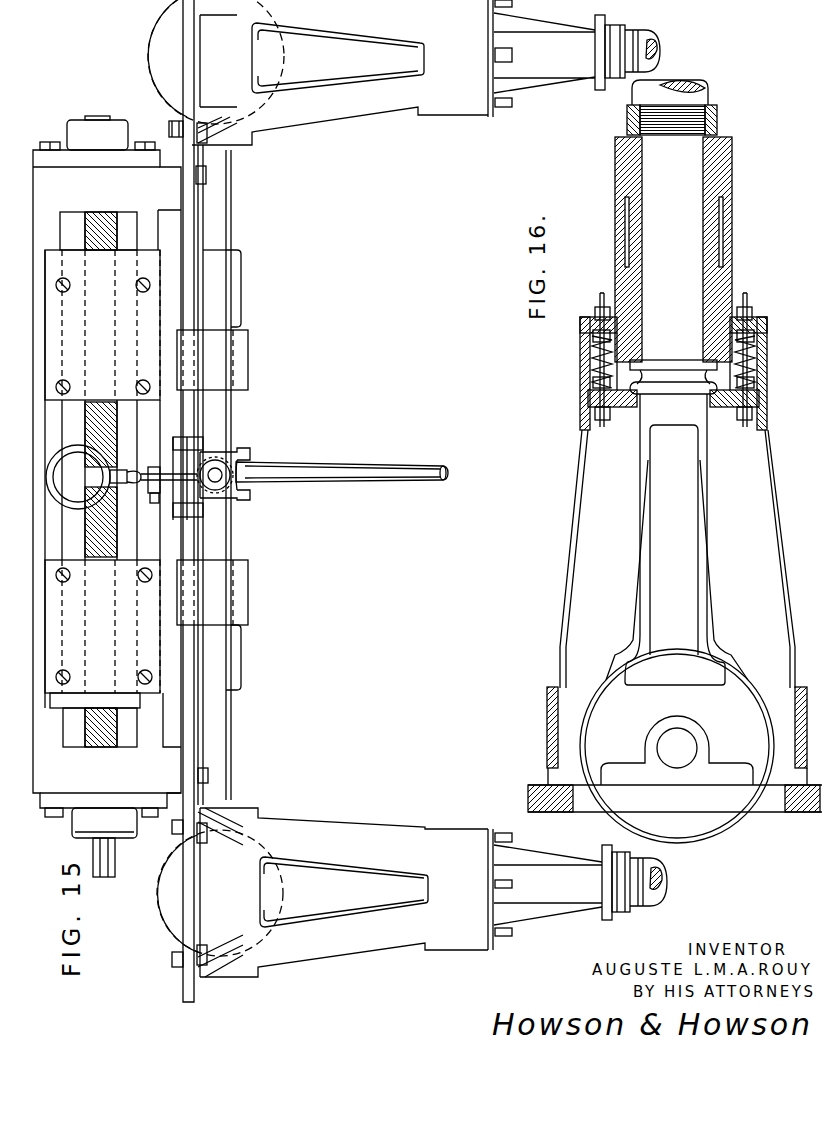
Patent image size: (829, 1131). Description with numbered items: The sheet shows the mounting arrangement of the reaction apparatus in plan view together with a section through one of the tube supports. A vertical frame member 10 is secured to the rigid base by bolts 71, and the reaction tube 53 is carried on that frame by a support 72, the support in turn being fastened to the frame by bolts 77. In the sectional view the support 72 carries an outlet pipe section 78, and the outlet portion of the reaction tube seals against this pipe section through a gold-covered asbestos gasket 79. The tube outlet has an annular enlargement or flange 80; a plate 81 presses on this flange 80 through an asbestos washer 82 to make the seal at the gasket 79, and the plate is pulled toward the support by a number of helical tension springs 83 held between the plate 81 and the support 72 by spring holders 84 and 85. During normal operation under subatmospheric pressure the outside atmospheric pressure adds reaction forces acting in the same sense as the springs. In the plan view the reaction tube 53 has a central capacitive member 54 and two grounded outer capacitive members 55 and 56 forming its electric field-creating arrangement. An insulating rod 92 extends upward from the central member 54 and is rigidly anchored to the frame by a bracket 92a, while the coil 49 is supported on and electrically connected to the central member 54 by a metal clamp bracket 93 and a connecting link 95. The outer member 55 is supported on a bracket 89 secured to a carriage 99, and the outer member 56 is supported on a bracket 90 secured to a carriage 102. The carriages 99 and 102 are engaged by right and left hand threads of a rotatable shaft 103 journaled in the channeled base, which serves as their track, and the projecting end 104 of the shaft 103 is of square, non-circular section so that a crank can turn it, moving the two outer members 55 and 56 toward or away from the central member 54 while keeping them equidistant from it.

In FIG. 16, the base 10 is at (797, 804).
In FIG. 15, the coil 49 is at (66, 455).
In FIG. 15, the reaction tube 53 is at (231, 215).
In FIG. 15, the central capacitive member 54 is at (242, 494).
In FIG. 15, the outer capacitive member 55 is at (250, 590).
In FIG. 15, the outer capacitive member 56 is at (249, 360).
In FIG. 15, the bolt 71 is at (207, 174).
In FIG. 15, the support 72 is at (322, 837).
In FIG. 16, the support 72 is at (565, 583).
In FIG. 15, the bolt 77 is at (213, 967).
In FIG. 16, the outlet pipe section 78 is at (677, 260).
In FIG. 16, the gold-covered asbestos gasket 79 is at (643, 346).
In FIG. 16, the flange 80 is at (670, 388).
In FIG. 16, the plate 81 is at (723, 409).
In FIG. 16, the asbestos washer 82 is at (633, 405).
In FIG. 16, the helical tension spring 83 is at (581, 362).
In FIG. 16, the spring holder 84 is at (602, 428).
In FIG. 15, the spring holder 85 is at (503, 108).
In FIG. 16, the spring holder 85 is at (601, 293).
In FIG. 15, the bracket 89 is at (241, 657).
In FIG. 15, the bracket 90 is at (242, 297).
In FIG. 15, the insulating rod 92 is at (234, 450).
In FIG. 15, the bracket 92a is at (228, 447).
In FIG. 15, the metal clamp bracket 93 is at (234, 500).
In FIG. 15, the connecting link 95 is at (140, 470).
In FIG. 15, the carriage 99 is at (77, 705).
In FIG. 15, the carriage 102 is at (73, 253).
In FIG. 15, the rotatable shaft 103 is at (119, 537).
In FIG. 15, the projecting end 104 is at (112, 878).